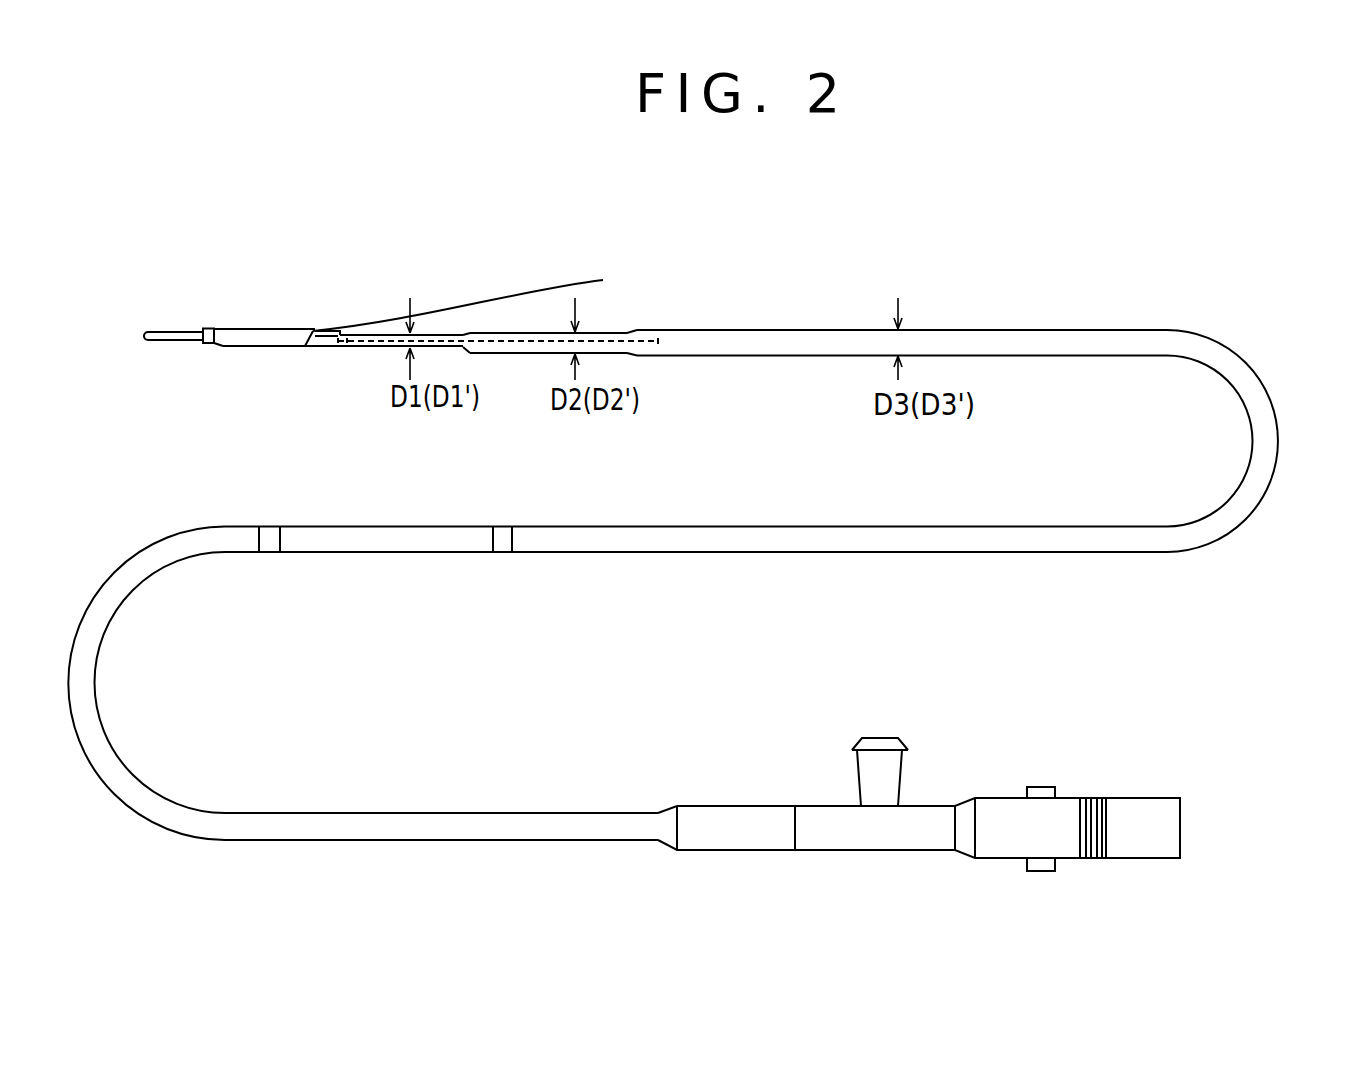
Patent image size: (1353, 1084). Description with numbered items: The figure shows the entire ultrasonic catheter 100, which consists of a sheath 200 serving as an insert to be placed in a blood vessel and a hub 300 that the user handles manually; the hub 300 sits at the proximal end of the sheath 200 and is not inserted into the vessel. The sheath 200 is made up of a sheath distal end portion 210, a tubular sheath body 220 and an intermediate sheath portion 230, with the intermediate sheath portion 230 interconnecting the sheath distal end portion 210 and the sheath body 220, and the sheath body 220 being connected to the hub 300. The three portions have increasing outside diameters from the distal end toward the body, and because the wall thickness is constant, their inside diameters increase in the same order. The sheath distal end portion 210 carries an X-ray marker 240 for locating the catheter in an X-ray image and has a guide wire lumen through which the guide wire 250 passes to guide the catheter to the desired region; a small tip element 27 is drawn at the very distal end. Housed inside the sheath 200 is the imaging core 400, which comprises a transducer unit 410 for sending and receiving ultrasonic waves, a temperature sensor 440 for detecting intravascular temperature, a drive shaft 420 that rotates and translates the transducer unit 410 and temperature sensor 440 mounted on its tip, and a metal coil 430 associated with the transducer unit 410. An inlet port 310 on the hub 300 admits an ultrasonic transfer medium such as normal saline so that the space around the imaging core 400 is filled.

The ultrasonic catheter 100 is at (1224, 311).
The sheath 200 is at (828, 313).
The sheath distal end portion 210 is at (453, 333).
The sheath body 220 is at (759, 329).
The intermediate sheath portion 230 is at (543, 332).
The X-ray marker 240 is at (211, 328).
The guide wire 250 is at (401, 289).
The tip member 27 is at (225, 348).
The hub 300 is at (913, 862).
The inlet port 310 is at (897, 768).
The imaging core 400 is at (425, 232).
The transducer unit 410 is at (370, 333).
The drive shaft 420 is at (397, 333).
The metal coil 430 is at (340, 331).
The temperature sensor 440 is at (367, 350).